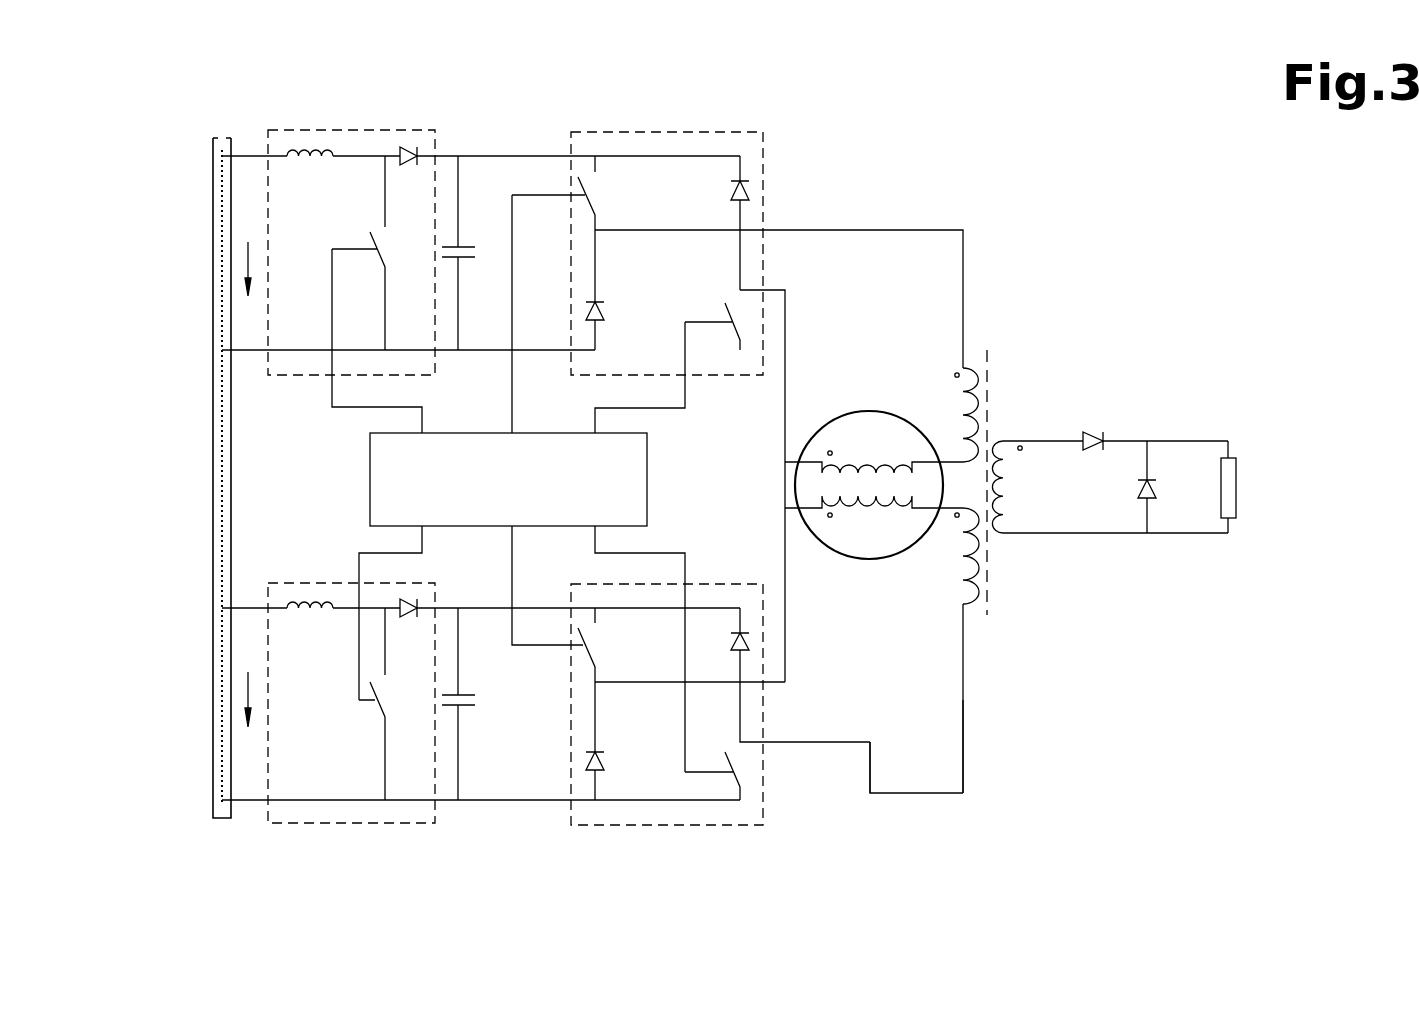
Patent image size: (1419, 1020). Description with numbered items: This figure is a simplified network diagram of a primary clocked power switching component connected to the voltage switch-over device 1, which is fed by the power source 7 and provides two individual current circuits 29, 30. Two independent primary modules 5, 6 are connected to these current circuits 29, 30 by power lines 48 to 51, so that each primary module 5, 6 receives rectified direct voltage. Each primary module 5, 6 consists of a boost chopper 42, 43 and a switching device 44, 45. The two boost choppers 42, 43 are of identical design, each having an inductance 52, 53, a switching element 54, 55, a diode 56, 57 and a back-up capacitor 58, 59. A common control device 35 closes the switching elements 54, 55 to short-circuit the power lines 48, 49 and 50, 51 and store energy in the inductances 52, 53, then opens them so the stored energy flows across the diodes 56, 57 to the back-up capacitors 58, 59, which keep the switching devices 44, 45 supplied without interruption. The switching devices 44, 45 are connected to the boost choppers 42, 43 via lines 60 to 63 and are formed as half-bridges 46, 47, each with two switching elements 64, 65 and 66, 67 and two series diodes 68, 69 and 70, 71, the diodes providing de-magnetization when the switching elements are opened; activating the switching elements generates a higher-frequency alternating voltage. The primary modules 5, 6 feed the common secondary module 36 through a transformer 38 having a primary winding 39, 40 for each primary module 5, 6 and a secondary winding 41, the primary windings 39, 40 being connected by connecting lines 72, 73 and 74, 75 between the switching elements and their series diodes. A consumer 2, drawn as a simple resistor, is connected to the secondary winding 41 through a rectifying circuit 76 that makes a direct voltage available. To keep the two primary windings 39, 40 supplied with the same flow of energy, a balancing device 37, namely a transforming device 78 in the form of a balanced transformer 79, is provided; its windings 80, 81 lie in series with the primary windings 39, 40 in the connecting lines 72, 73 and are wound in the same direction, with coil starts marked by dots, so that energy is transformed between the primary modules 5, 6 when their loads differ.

The voltage switch-over device 1 is at (222, 725).
The consumer 2 is at (1234, 490).
The primary module 5 is at (933, 243).
The primary module 6 is at (908, 772).
The power source 7 is at (199, 484).
The current circuit 29 is at (243, 263).
The current circuit 30 is at (243, 685).
The control device 35 is at (597, 472).
The secondary module 36 is at (1127, 370).
The balancing device 37 is at (992, 522).
The transformer 38 is at (997, 359).
The primary winding 39 is at (994, 404).
The primary winding 40 is at (989, 569).
The secondary winding 41 is at (1014, 493).
The boost chopper 42 is at (373, 150).
The boost chopper 43 is at (318, 826).
The switching device 44 is at (779, 130).
The switching device 45 is at (778, 823).
The half-bridge 46 is at (751, 152).
The half-bridge 47 is at (682, 812).
The power line 48 is at (250, 152).
The power line 49 is at (255, 365).
The power line 50 is at (252, 600).
The power line 51 is at (250, 806).
The inductance 52 is at (310, 148).
The inductance 53 is at (309, 590).
The switching element 54 is at (364, 233).
The switching element 55 is at (366, 711).
The diode 56 is at (406, 150).
The diode 57 is at (398, 598).
The back-up capacitor 58 is at (468, 233).
The back-up capacitor 59 is at (484, 723).
The line 60 is at (530, 156).
The line 61 is at (524, 352).
The line 62 is at (552, 604).
The line 63 is at (518, 805).
The switching element 64 is at (600, 191).
The switching element 65 is at (747, 318).
The switching element 66 is at (573, 659).
The switching element 67 is at (752, 773).
The diode 68 is at (745, 190).
The diode 69 is at (603, 314).
The diode 70 is at (747, 646).
The diode 71 is at (597, 764).
The connecting line 72 is at (902, 231).
The connecting line 73 is at (788, 333).
The connecting line 74 is at (945, 510).
The connecting line 75 is at (968, 765).
The rectifying circuit 76 is at (1159, 426).
The transforming device 78 is at (887, 438).
The balanced transformer 79 is at (792, 488).
The winding 80 is at (866, 464).
The winding 81 is at (873, 513).